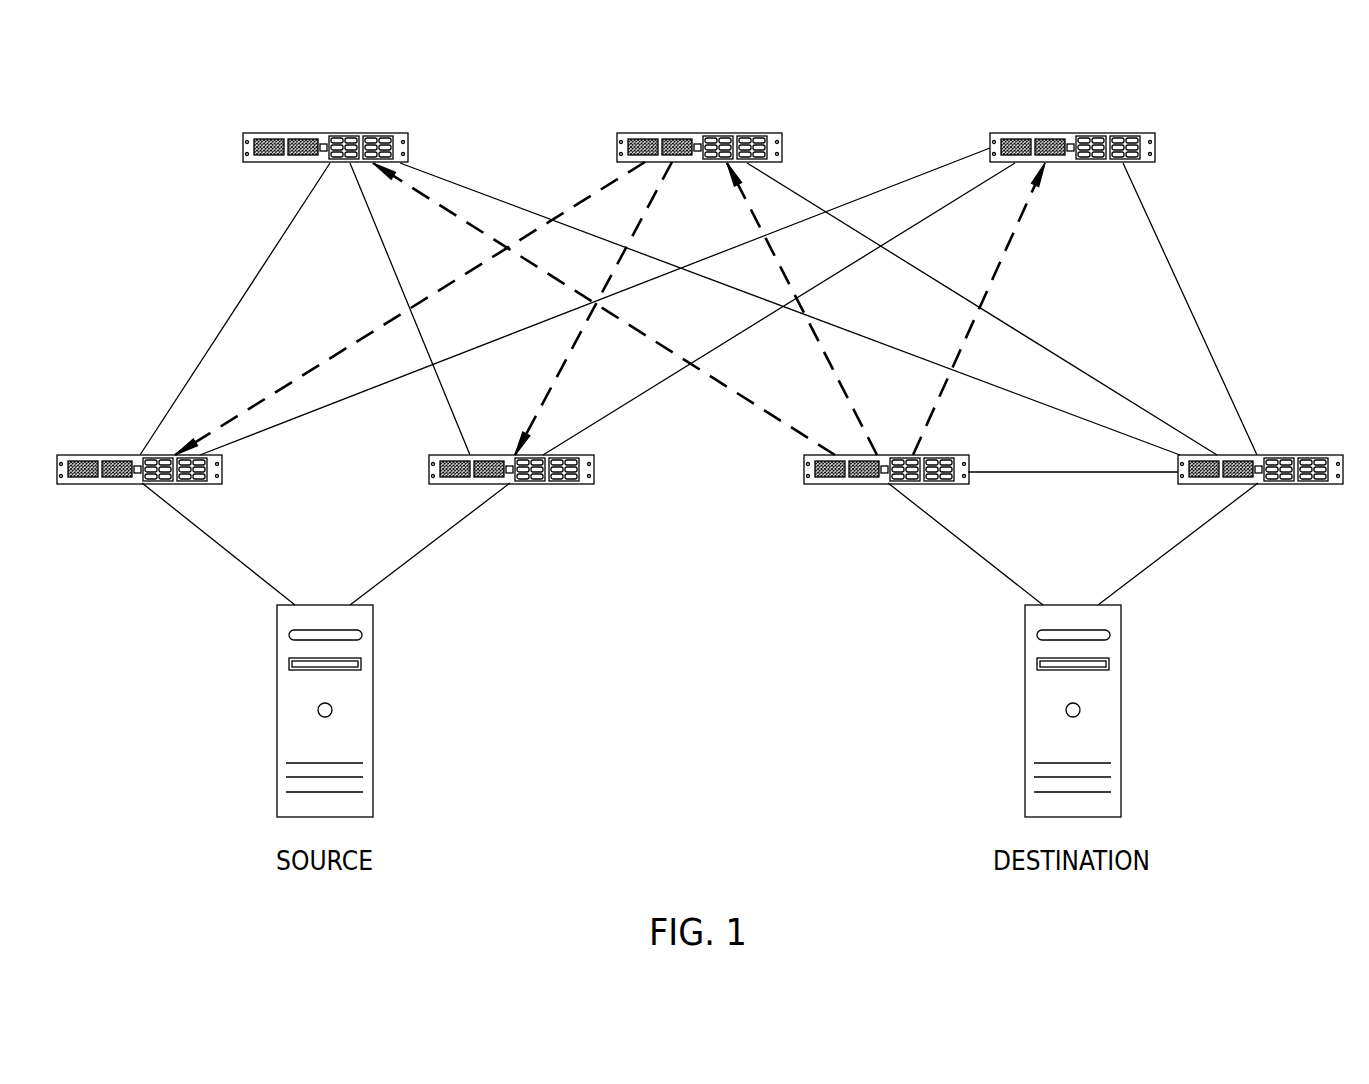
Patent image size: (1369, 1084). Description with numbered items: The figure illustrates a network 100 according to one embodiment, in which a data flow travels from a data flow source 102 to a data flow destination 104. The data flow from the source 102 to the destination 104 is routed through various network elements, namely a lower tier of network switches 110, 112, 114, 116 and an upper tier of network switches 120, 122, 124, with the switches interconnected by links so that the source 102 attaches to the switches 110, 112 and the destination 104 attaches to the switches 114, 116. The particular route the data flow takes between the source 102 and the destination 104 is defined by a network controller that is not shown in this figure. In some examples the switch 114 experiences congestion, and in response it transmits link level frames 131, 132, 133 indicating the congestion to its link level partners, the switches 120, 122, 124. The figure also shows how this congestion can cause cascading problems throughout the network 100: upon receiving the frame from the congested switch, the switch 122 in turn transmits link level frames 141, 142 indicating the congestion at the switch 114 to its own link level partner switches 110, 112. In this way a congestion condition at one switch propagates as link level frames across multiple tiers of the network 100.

The network 100 is at (1256, 84).
The data flow source 102 is at (373, 735).
The data flow destination 104 is at (1120, 733).
The network switch 110 is at (93, 483).
The network switch 112 is at (563, 483).
The network switch 114 is at (832, 483).
The network switch 116 is at (1287, 483).
The network switch 120 is at (376, 133).
The network switch 122 is at (752, 132).
The network switch 124 is at (1123, 133).
The link level frame 131 is at (427, 200).
The link level frame 132 is at (745, 203).
The link level frame 133 is at (1003, 267).
The link level frame 141 is at (325, 355).
The link level frame 142 is at (553, 377).